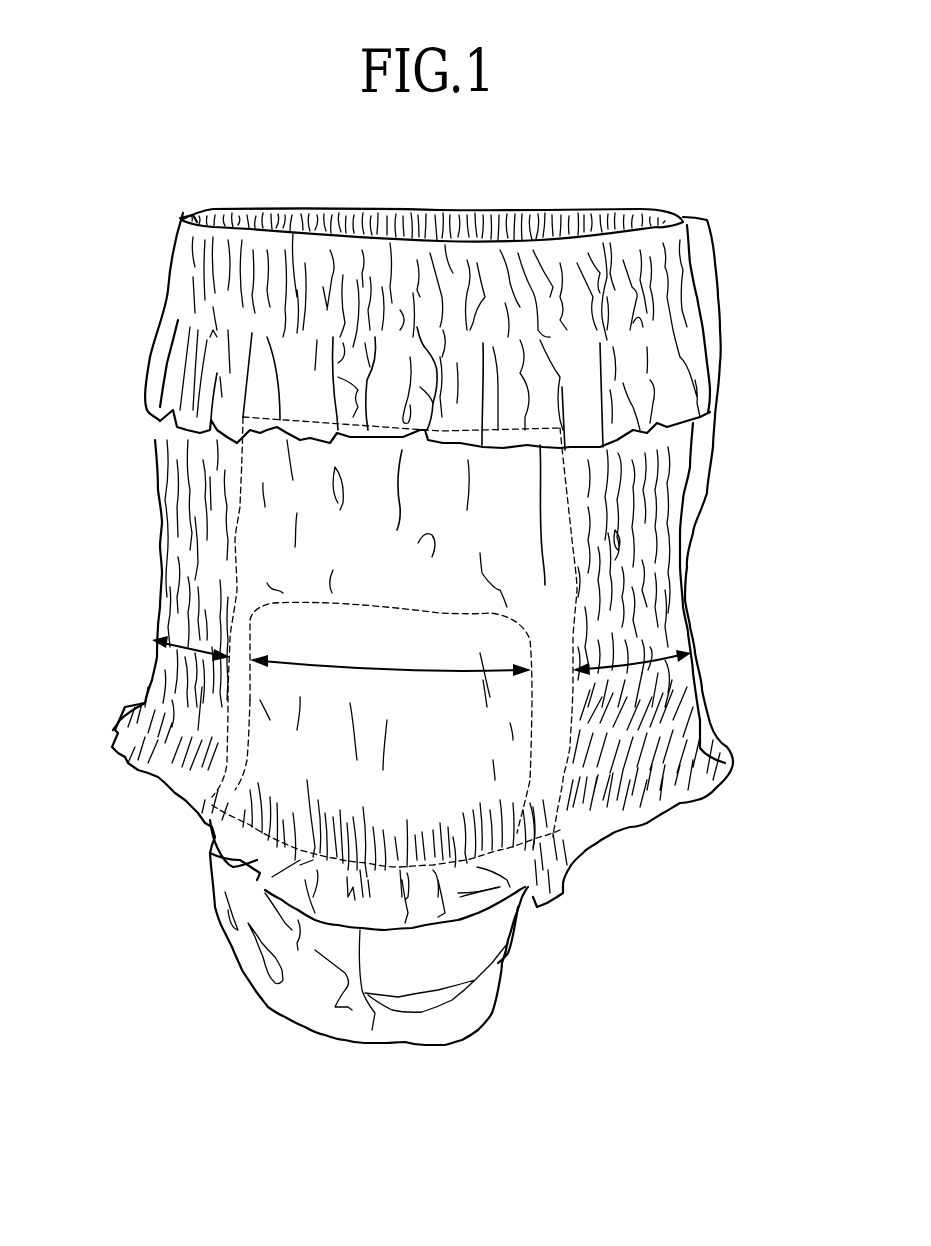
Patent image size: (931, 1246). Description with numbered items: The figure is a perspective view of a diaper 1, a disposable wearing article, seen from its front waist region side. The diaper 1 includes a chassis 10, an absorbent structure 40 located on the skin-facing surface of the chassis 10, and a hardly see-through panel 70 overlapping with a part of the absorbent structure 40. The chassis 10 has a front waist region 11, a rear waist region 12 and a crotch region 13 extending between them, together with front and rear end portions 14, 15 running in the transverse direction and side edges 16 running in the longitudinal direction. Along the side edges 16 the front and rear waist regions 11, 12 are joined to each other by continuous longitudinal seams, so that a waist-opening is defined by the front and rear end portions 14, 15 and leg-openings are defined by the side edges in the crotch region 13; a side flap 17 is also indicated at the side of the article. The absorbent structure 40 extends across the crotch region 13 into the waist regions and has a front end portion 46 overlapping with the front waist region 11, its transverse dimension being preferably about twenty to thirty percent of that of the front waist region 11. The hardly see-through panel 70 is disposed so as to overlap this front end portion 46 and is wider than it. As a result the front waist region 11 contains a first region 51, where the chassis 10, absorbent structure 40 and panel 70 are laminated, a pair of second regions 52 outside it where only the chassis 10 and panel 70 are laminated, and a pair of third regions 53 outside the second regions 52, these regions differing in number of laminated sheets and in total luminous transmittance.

The diaper 1 is at (624, 166).
The chassis 10 is at (168, 493).
The front waist region 11 is at (181, 553).
The rear waist region 12 is at (463, 217).
The crotch region 13 is at (392, 1025).
The front end portion 14 is at (358, 228).
The rear end portion 15 is at (407, 217).
The side edge 16 is at (707, 496).
The side flap 17 is at (705, 450).
The absorbent structure 40 is at (203, 813).
The front end portion 46 is at (252, 763).
The first region 51 is at (432, 662).
The second region 52 is at (248, 640).
The third region 53 is at (175, 657).
The hardly see-through panel 70 is at (237, 590).